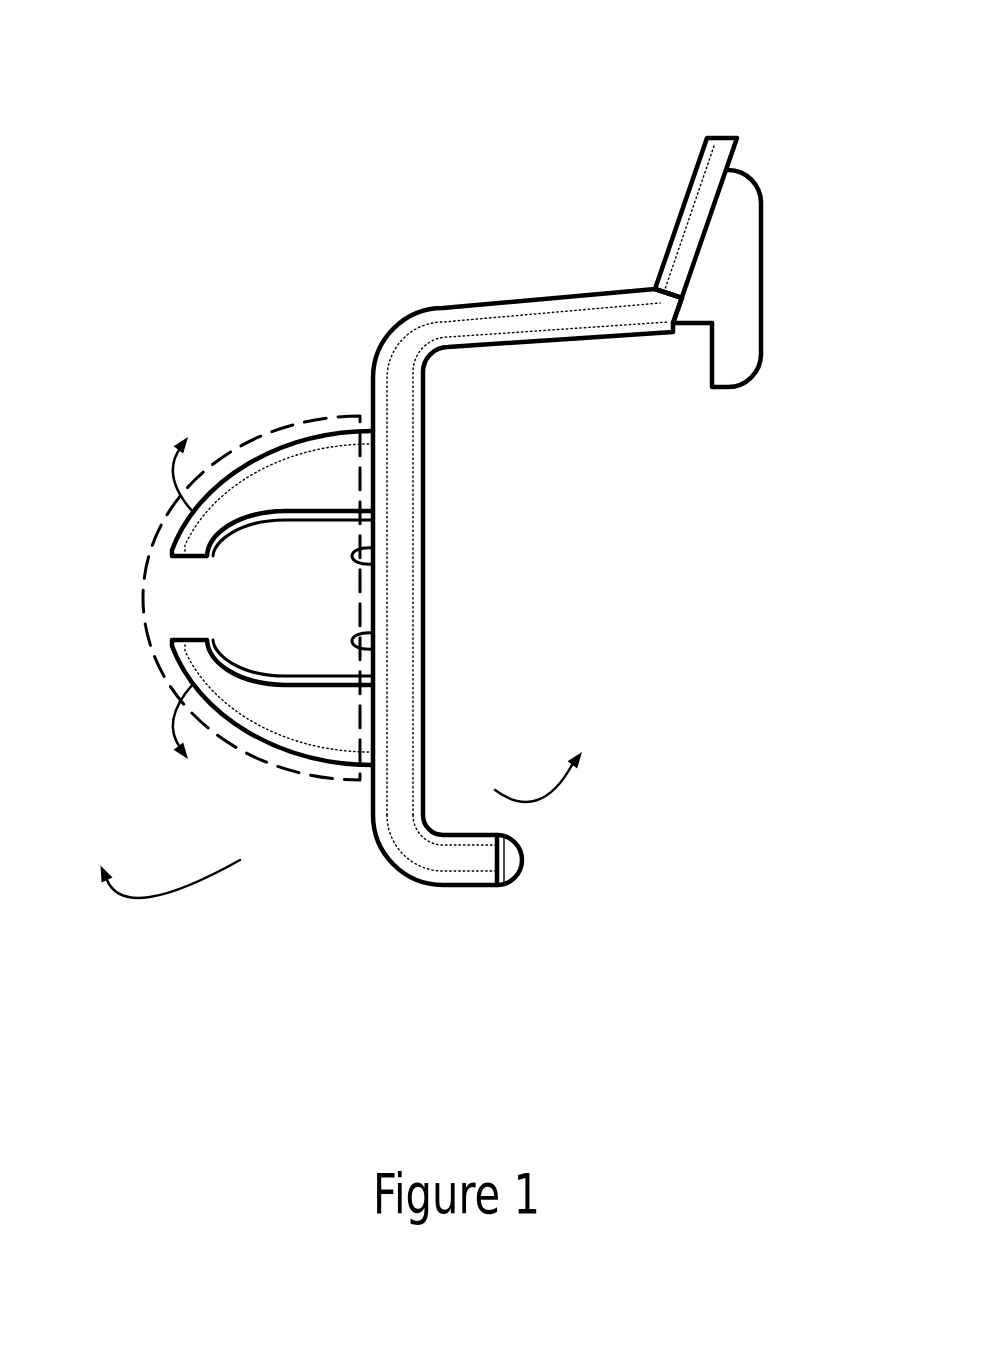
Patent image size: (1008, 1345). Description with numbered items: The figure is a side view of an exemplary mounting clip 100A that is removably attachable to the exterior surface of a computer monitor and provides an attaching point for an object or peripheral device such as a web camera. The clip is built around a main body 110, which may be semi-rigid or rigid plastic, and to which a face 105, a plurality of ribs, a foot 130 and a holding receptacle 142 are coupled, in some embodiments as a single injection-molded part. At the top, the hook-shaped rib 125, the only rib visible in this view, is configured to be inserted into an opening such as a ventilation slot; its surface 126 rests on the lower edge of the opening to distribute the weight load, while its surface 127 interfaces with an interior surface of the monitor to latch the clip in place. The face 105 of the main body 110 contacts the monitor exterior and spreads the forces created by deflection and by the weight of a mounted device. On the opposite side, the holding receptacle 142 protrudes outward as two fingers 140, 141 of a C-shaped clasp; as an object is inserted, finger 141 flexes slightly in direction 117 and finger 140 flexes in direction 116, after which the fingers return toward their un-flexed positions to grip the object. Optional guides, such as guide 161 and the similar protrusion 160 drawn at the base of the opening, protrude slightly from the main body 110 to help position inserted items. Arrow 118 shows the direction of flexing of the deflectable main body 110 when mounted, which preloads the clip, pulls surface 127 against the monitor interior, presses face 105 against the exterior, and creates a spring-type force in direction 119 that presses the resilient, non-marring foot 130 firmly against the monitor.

The mounting clip 100A is at (825, 32).
The face 105 is at (730, 157).
The main body 110 is at (443, 333).
The direction 116 is at (172, 707).
The direction 117 is at (173, 487).
The direction of flexing 118 is at (168, 898).
The direction 119 is at (547, 795).
The rib 125 is at (740, 301).
The surface 126 is at (680, 328).
The surface 127 is at (703, 384).
The foot 130 is at (512, 848).
The finger 140 is at (313, 737).
The finger 141 is at (290, 478).
The holding receptacle 142 is at (303, 614).
The upper snap 160 is at (377, 548).
The guide 161 is at (377, 637).